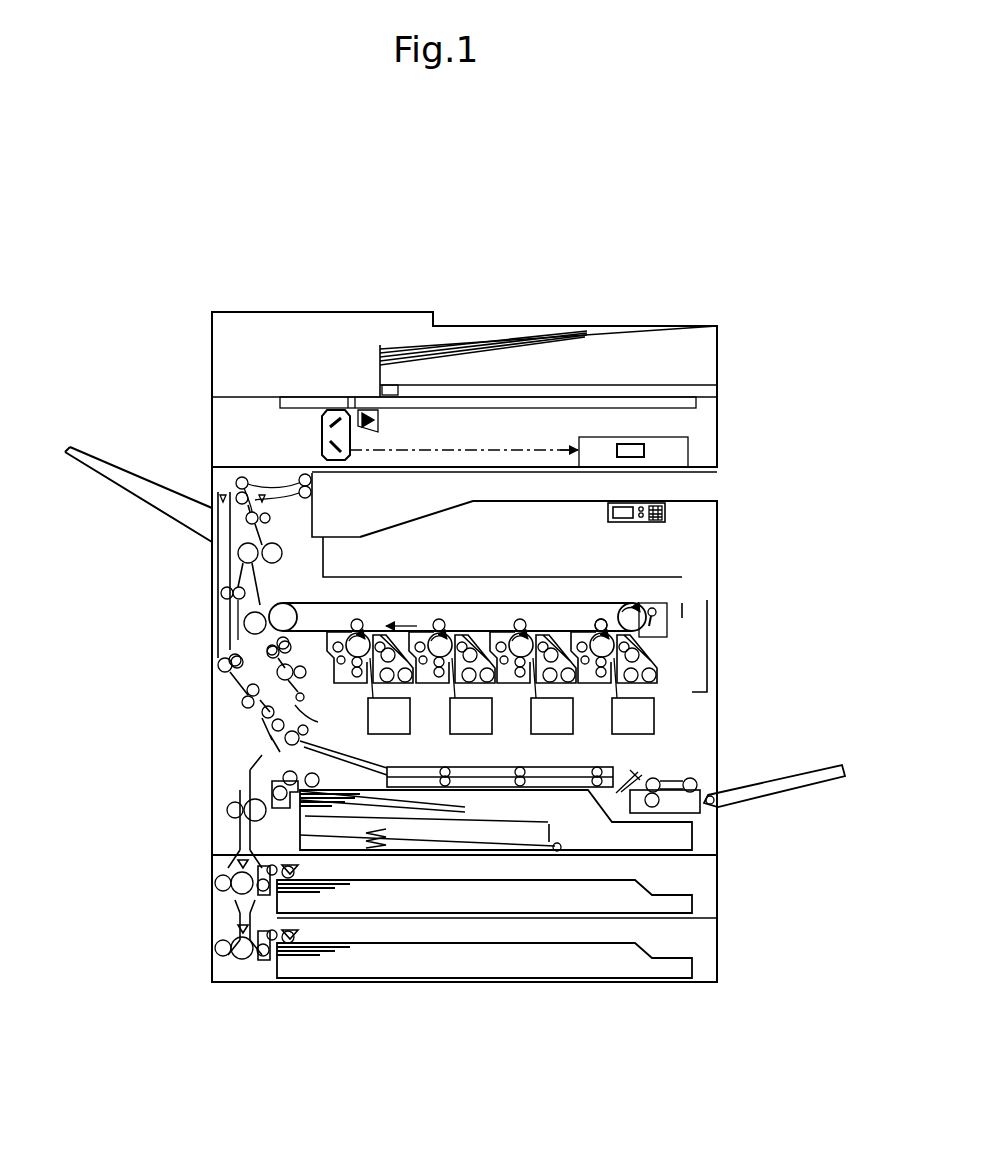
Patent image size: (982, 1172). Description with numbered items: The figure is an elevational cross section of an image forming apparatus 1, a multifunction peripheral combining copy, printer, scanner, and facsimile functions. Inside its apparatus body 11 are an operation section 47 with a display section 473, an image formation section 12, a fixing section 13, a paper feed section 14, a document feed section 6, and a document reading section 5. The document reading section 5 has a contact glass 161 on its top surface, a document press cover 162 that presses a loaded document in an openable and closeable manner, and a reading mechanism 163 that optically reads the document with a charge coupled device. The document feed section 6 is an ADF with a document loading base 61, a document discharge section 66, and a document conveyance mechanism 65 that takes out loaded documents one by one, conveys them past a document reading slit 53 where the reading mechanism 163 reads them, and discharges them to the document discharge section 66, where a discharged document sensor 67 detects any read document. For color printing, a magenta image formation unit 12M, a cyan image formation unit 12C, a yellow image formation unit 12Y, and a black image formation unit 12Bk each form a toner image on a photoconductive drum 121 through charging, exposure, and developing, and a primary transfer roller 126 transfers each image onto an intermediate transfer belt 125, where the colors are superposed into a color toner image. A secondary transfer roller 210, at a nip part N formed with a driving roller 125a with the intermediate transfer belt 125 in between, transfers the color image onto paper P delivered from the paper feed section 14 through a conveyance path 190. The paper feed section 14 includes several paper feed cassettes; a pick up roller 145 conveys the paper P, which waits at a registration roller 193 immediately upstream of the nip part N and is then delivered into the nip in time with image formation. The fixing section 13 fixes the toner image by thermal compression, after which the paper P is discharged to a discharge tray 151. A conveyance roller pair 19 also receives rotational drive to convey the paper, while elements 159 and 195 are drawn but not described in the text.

The image forming apparatus 1 is at (789, 372).
The document reading section 5 is at (196, 430).
The document feed section 6 is at (548, 323).
The apparatus body 11 is at (721, 522).
The image formation section 12 is at (702, 634).
The black image formation unit 12Bk is at (367, 619).
The yellow image formation unit 12Y is at (443, 610).
The cyan image formation unit 12C is at (530, 621).
The magenta image formation unit 12M is at (614, 644).
The fixing section 13 is at (229, 555).
The paper feed section 14 is at (699, 880).
The conveyance roller pair 19 is at (306, 704).
The operation section 47 is at (677, 512).
The document reading slit 53 is at (333, 405).
The document loading base 61 is at (633, 330).
The document conveyance mechanism 65 is at (291, 365).
The document discharge section 66 is at (650, 386).
The discharged document sensor 67 is at (396, 392).
The photoconductive drum 121 is at (598, 697).
The intermediate transfer belt 125 is at (468, 595).
The driving roller 125a is at (302, 586).
The primary transfer roller 126 is at (602, 618).
The pick up roller 145 is at (263, 940).
The discharge tray 151 is at (345, 535).
The conveying roller 159 is at (312, 482).
The contact glass 161 is at (616, 401).
The document press cover 162 is at (548, 395).
The reading mechanism 163 is at (316, 445).
The conveyance path 190 is at (250, 617).
The registration roller 193 is at (250, 683).
The discharge roller 195 is at (240, 598).
The secondary transfer roller 210 is at (233, 630).
The display section 473 is at (620, 508).
The nip part N is at (223, 593).
The paper P is at (540, 808).